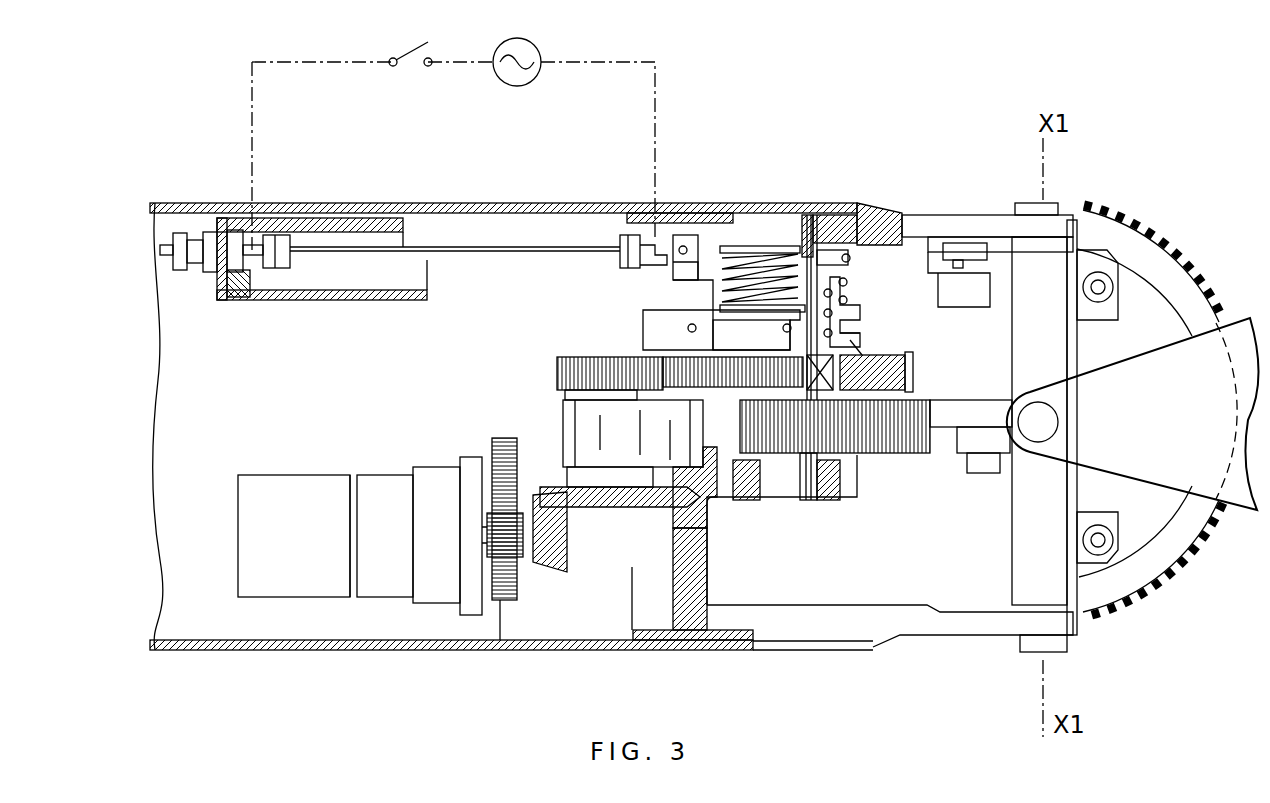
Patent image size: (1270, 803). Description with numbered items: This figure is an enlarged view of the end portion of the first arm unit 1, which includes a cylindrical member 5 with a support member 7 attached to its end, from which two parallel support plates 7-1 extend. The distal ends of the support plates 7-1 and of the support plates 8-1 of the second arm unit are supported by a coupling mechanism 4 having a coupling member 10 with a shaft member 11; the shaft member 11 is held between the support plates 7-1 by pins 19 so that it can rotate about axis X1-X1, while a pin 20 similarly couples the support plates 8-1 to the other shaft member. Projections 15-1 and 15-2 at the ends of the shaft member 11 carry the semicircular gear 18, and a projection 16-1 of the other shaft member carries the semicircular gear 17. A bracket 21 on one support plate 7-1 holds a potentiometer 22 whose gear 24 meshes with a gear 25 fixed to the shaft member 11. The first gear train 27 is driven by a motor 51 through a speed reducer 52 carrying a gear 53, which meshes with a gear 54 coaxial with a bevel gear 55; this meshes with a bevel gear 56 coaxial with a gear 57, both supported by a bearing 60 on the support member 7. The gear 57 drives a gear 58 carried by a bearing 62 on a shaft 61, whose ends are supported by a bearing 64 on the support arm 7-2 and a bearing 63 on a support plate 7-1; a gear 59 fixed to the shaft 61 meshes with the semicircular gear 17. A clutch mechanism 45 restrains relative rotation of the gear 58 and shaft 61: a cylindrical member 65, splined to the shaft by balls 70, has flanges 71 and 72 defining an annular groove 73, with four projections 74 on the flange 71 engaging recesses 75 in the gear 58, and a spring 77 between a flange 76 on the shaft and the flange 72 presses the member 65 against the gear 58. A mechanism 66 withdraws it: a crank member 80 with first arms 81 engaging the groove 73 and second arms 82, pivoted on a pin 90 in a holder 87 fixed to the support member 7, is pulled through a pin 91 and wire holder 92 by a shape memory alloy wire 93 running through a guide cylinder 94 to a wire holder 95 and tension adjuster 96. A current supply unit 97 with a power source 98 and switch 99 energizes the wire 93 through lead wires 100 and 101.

The first arm unit 1 is at (638, 652).
The coupling mechanism 4 is at (1070, 337).
The cylindrical member 5 is at (342, 652).
The support member 7 is at (704, 570).
The support plates 7-1 is at (938, 222).
The support arm 7-2 is at (840, 500).
The support plates 8-1 is at (1226, 325).
The coupling member 10 is at (1026, 556).
The shaft member 11 is at (1014, 522).
The projection 15-1 is at (1087, 263).
The projection 15-2 is at (1103, 521).
The projection 16-1 is at (963, 442).
The semicircular gear 17 is at (888, 453).
The semicircular gear 18 is at (1170, 548).
The pin 19 is at (1040, 203).
The pin 20 is at (1060, 418).
The bracket 21 is at (912, 235).
The potentiometer 22 is at (984, 297).
The gear 24 is at (965, 243).
The gear 25 is at (1033, 246).
The first gear train 27 is at (486, 392).
The clutch mechanism 45 is at (584, 314).
The motor 51 is at (278, 490).
The speed reducer 52 is at (380, 490).
The gear 53 is at (512, 556).
The gear 54 is at (501, 640).
The bevel gear 55 is at (560, 571).
The bevel gear 56 is at (627, 508).
The gear 57 is at (558, 370).
The gear 58 is at (922, 397).
The gear 59 is at (736, 500).
The bearing 60 is at (573, 418).
The shaft 61 is at (846, 318).
The bearing 62 is at (896, 385).
The bearing 63 is at (808, 218).
The bearing 64 is at (809, 500).
The cylindrical member 65 is at (850, 300).
The mechanism 66 is at (566, 267).
The balls 70 is at (805, 268).
The flange 71 is at (858, 338).
The flange 72 is at (850, 262).
The annular groove 73 is at (858, 310).
The projections 74 is at (862, 350).
The recesses 75 is at (910, 365).
The flange 76 is at (737, 250).
The spring 77 is at (848, 254).
The crank member 80 is at (673, 288).
The first arms 81 is at (728, 338).
The second arms 82 is at (677, 264).
The holder 87 is at (645, 340).
The pin 90 is at (688, 328).
The pin 91 is at (685, 243).
The wire holder 92 is at (650, 250).
The wire 93 is at (470, 251).
The guide cylinder 94 is at (303, 300).
The wire holder 95 is at (284, 250).
The tension adjuster 96 is at (196, 272).
The current supply unit 97 is at (466, 80).
The power source 98 is at (540, 49).
The switch 99 is at (400, 57).
The lead wire 100 is at (660, 118).
The lead wire 101 is at (252, 136).